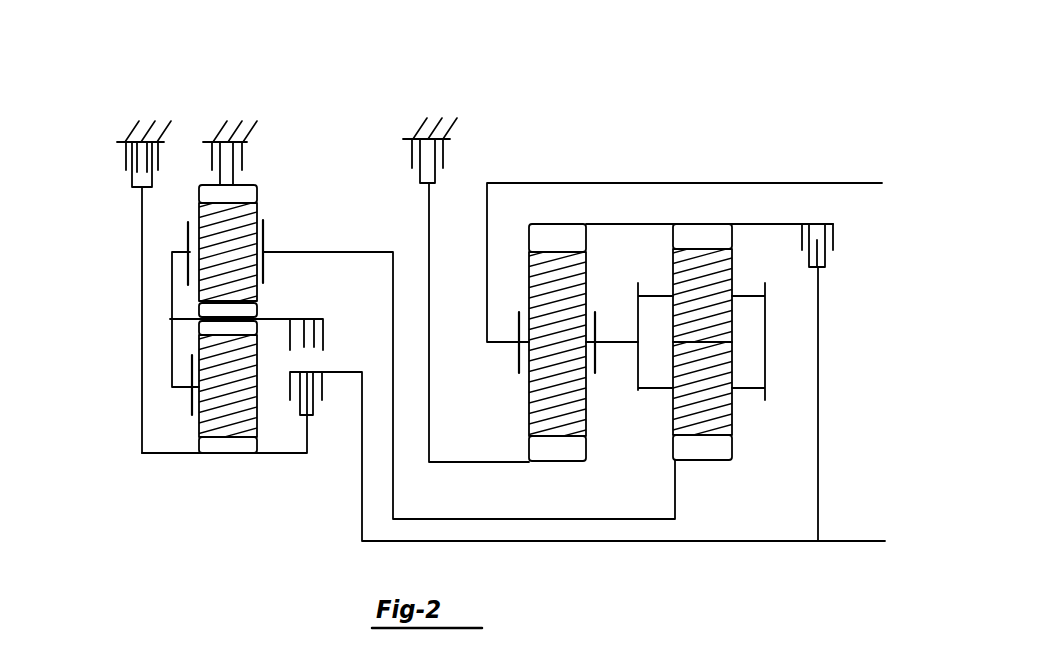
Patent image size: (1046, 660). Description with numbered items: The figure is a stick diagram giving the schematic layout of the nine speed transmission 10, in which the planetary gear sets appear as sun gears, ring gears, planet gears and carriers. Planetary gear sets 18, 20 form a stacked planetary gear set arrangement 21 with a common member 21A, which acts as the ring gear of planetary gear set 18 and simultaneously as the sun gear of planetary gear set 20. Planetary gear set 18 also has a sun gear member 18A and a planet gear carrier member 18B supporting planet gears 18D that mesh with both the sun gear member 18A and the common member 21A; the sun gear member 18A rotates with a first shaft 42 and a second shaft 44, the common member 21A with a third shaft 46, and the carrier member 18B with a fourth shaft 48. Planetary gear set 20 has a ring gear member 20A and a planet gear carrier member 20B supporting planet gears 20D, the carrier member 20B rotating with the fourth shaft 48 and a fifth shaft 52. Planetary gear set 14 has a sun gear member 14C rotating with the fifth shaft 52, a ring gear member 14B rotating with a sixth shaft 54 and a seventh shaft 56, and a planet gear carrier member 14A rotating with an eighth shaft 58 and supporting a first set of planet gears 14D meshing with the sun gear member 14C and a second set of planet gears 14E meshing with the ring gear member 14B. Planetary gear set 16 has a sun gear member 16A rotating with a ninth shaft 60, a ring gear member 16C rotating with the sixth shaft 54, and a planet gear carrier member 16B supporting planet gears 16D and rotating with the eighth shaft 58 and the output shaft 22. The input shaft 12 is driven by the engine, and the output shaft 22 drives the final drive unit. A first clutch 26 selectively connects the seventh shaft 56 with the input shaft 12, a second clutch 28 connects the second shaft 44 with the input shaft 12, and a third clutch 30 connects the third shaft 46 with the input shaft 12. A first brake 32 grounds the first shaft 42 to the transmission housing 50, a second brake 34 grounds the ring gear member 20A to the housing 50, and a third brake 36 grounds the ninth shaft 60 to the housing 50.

The nine speed transmission 10 is at (666, 97).
The input shaft or member 12 is at (850, 541).
The planetary gear set 14 is at (725, 215).
The planet gear carrier member 14A is at (765, 344).
The ring gear member 14B is at (707, 235).
The sun gear member 14C is at (708, 448).
The first set of planet gears 14D is at (733, 412).
The second set of planet gears 14E is at (730, 272).
The planetary gear set 16 is at (574, 216).
The sun gear member 16A is at (558, 455).
The planet gear carrier member 16B is at (596, 320).
The ring gear member 16C is at (557, 235).
The planet gears 16D is at (528, 280).
The planetary gear set 18 is at (237, 462).
The sun gear member 18A is at (213, 448).
The planet gear carrier member 18B is at (192, 404).
The planet gears 18D is at (258, 413).
The planetary gear set 20 is at (268, 209).
The ring gear member 20A is at (256, 176).
The planet gear carrier member 20B is at (188, 222).
The planet gears 20D is at (198, 292).
The stacked planetary gear set arrangement 21 is at (191, 179).
The common member 21A is at (170, 319).
The output shaft or member 22 is at (795, 182).
The first clutch 26 is at (833, 240).
The second clutch 28 is at (326, 398).
The third clutch 30 is at (324, 323).
The first brake 32 is at (124, 165).
The second brake 34 is at (246, 156).
The third brake 36 is at (443, 150).
The first shaft or interconnecting member 42 is at (142, 235).
The second shaft or interconnecting member 44 is at (267, 456).
The third shaft or interconnecting member 46 is at (290, 319).
The fourth shaft or interconnecting member 48 is at (172, 370).
The transmission housing 50 is at (132, 136).
The fifth shaft or interconnecting member 52 is at (393, 272).
The sixth shaft or interconnecting member 54 is at (623, 220).
The seventh shaft or interconnecting member 56 is at (812, 220).
The eighth shaft or interconnecting member 58 is at (615, 345).
The ninth shaft or interconnecting member 60 is at (429, 345).